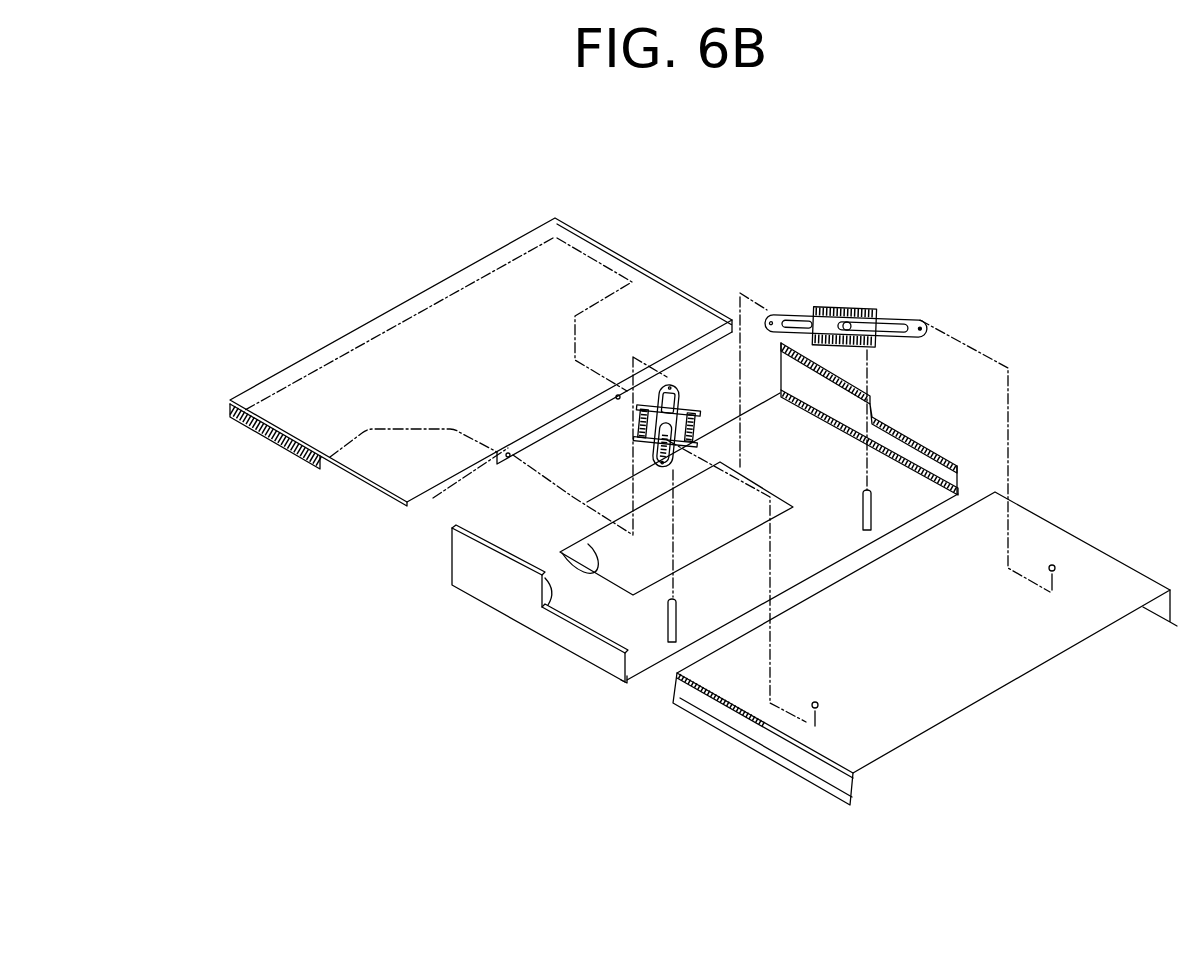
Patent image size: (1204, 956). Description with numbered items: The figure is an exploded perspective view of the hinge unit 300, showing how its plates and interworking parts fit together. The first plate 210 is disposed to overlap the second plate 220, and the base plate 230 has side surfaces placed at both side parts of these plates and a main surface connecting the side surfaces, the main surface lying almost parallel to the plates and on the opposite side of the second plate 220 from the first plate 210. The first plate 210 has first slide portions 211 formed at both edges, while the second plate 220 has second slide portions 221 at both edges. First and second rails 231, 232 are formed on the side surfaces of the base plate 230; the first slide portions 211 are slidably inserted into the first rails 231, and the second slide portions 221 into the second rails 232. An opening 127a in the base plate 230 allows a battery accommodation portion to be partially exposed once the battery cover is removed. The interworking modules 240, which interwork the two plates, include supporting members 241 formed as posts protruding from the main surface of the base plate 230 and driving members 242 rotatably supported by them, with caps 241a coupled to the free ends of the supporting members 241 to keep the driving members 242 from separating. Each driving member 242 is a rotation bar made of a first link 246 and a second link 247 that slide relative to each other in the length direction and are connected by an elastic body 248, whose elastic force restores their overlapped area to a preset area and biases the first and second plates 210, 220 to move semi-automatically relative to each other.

The slide assembly 300 is at (430, 747).
The first plate 210 is at (330, 473).
The first slide portions 211 is at (384, 488).
The opening 127a is at (595, 565).
The base plate 230 is at (478, 606).
The first rails 231 is at (540, 603).
The second rails 232 is at (628, 687).
The interworking modules 240 is at (1060, 388).
The supporting members 241 is at (958, 468).
The caps 241a is at (843, 308).
The driving members 242 is at (912, 350).
The first link 246 is at (800, 313).
The second link 247 is at (910, 320).
The elastic body 248 is at (860, 310).
The second plate 220 is at (750, 765).
The second slide portions 221 is at (695, 720).